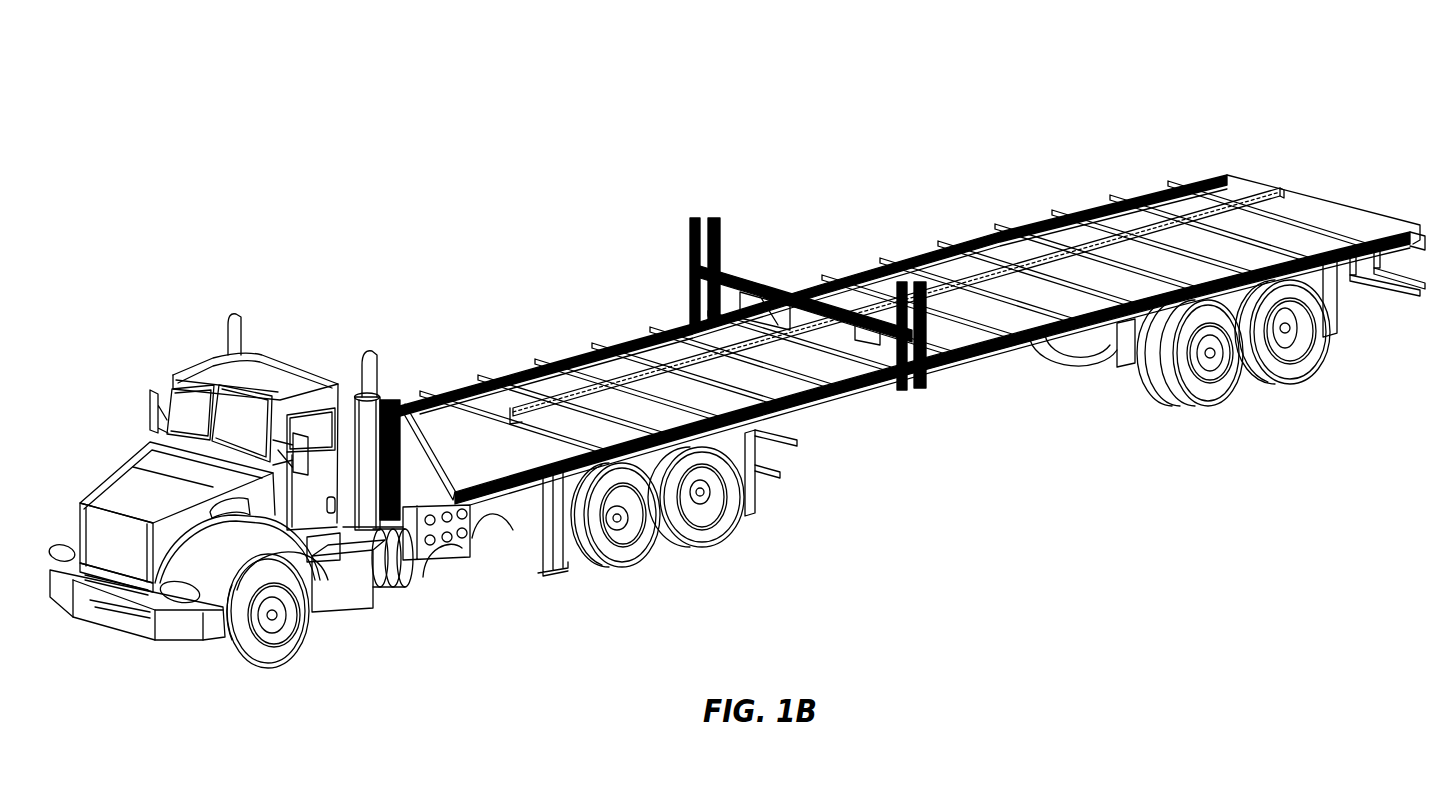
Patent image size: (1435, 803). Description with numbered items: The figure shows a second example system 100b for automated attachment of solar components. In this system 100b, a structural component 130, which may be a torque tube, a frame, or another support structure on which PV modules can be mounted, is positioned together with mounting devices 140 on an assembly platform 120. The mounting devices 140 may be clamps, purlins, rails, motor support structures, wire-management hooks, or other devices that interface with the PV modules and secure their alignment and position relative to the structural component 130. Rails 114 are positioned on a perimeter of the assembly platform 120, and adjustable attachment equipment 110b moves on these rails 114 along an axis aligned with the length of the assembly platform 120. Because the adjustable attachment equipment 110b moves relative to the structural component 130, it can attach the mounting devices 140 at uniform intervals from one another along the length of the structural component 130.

The system of automated attachment of solar components 100b is at (123, 95).
The adjustable attachment equipment 110b is at (720, 245).
The rails 114 is at (798, 398).
The assembly platform 120 is at (437, 427).
The structural component 130 is at (563, 380).
The mounting devices 140 is at (1257, 203).